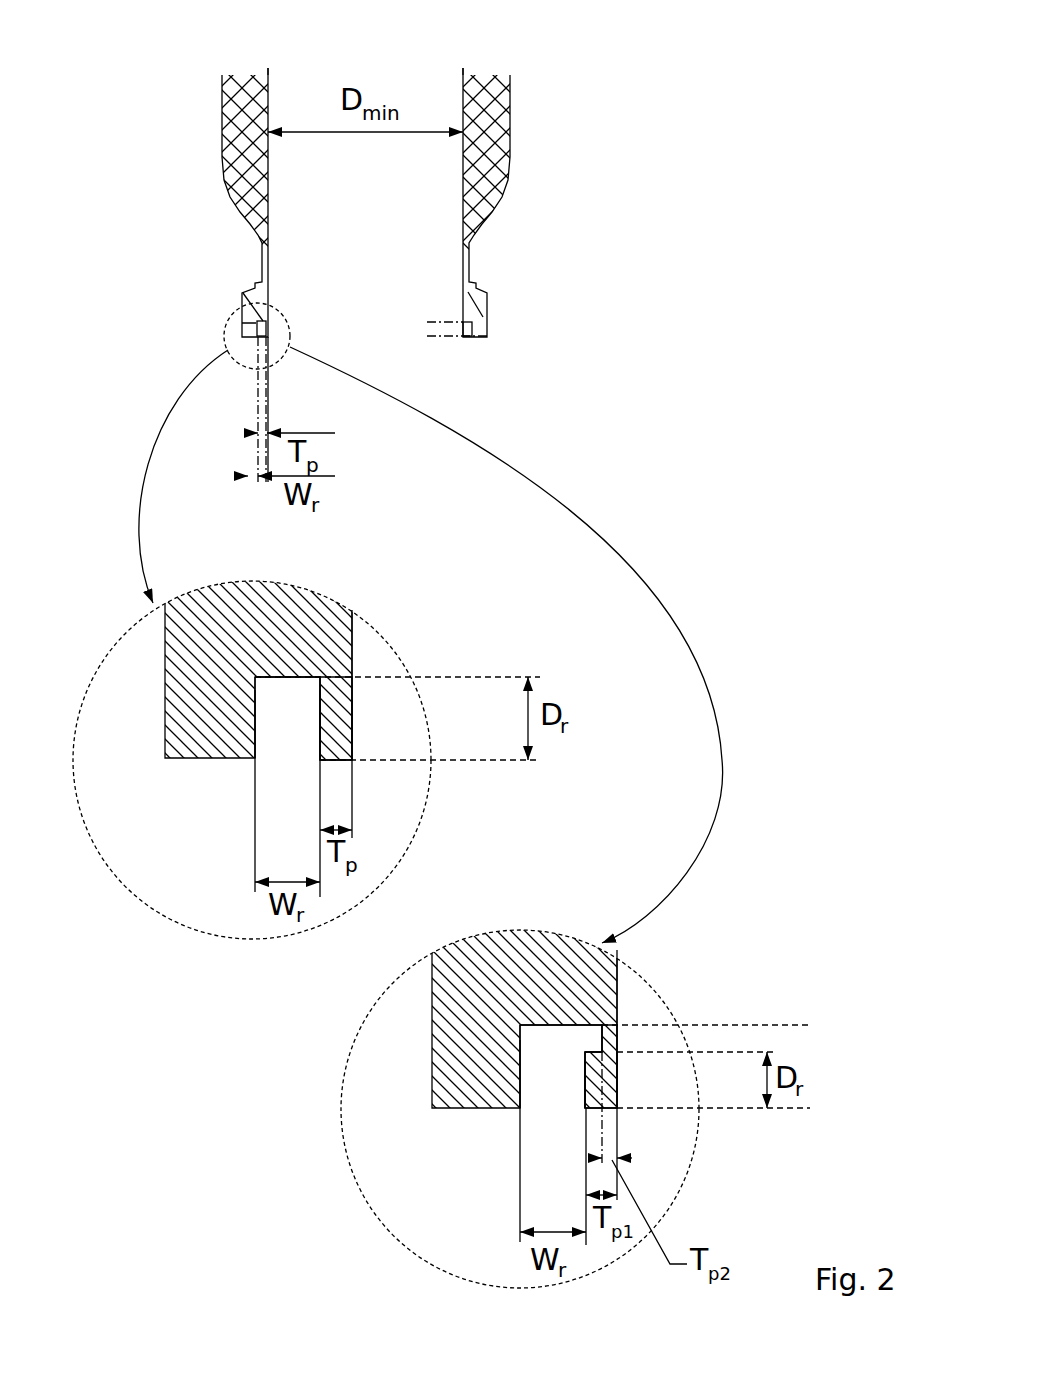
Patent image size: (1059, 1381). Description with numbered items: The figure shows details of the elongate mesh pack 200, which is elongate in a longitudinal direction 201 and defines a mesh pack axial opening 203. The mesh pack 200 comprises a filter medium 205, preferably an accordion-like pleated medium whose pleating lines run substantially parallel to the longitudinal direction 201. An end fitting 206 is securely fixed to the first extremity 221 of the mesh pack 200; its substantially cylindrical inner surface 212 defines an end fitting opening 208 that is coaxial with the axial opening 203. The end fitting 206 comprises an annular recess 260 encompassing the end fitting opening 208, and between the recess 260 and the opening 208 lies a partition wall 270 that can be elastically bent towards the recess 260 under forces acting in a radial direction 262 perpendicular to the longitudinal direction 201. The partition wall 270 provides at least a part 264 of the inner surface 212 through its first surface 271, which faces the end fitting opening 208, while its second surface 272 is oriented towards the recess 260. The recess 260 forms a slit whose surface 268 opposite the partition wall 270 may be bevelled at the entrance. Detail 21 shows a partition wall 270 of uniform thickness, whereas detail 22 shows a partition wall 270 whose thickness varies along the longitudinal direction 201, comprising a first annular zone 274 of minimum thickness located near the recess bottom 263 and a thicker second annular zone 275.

The mesh pack 200 is at (585, 65).
The longitudinal direction 201 is at (542, 97).
The mesh pack axial opening 203 is at (404, 433).
The filter medium 205 is at (235, 120).
The end fitting 206 is at (477, 306).
The end fitting opening 208 is at (394, 345).
The inner surface 212 is at (463, 281).
The first extremity 221 is at (538, 232).
The annular recess 260 is at (256, 330).
The radial direction 262 is at (278, 410).
The recess bottom 263 is at (279, 676).
The part of the inner surface 264 is at (424, 330).
The surface opposite to the partition wall 268 is at (258, 735).
The partition wall 270 is at (266, 333).
The first surface 271 is at (462, 322).
The second surface 272 is at (472, 328).
The first annular zone 274 is at (600, 1037).
The second annular zone 275 is at (585, 1067).
The detail 21 is at (130, 630).
The detail 22 is at (628, 968).